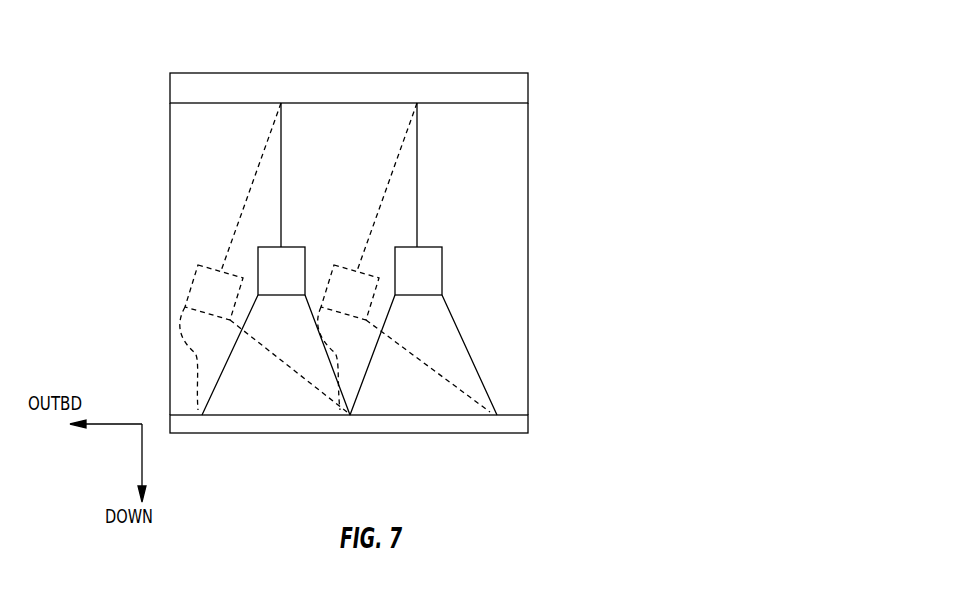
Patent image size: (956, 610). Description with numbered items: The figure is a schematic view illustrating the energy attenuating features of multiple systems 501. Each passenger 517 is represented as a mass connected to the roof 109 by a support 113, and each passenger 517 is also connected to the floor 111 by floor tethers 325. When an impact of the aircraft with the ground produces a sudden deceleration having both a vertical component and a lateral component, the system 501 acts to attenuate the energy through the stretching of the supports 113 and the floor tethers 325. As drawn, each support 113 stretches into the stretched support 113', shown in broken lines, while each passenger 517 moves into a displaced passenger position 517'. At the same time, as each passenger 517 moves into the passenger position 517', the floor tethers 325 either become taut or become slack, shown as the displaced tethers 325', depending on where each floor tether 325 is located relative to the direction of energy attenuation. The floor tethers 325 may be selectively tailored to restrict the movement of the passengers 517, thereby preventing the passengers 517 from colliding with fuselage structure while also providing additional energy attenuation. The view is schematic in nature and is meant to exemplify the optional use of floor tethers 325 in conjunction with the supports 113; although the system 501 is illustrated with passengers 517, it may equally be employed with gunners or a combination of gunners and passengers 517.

The roof 109 is at (492, 103).
The floor 111 is at (523, 417).
The support 113 is at (364, 175).
The stretched support 113' is at (361, 187).
The passenger 517 is at (359, 266).
The passenger position 517' is at (355, 293).
The floor tether 325 is at (396, 396).
The displaced floor tether 325' is at (347, 395).
The system 501 is at (245, 127).